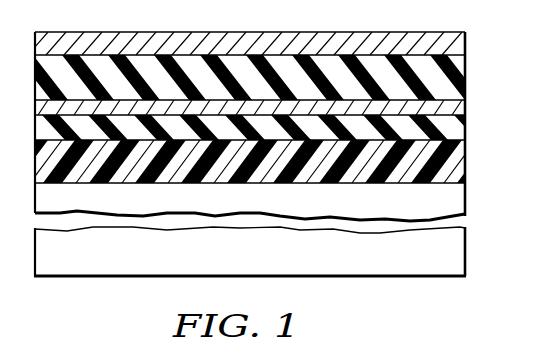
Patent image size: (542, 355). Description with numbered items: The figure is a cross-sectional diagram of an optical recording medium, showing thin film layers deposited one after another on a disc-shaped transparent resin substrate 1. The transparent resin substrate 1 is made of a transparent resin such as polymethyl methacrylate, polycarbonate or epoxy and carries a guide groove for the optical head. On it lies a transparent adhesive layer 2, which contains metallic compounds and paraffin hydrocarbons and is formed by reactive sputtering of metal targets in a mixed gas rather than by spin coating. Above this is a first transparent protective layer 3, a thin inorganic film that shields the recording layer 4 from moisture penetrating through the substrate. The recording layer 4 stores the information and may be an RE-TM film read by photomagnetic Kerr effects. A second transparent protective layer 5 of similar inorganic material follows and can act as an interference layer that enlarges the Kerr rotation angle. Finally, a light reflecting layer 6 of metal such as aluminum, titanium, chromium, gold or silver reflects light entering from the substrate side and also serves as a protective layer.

The transparent resin substrate 1 is at (452, 250).
The transparent adhesive layer 2 is at (457, 165).
The first transparent protective layer 3 is at (452, 135).
The recording layer 4 is at (456, 111).
The second transparent protective layer 5 is at (457, 64).
The light reflecting layer 6 is at (458, 45).